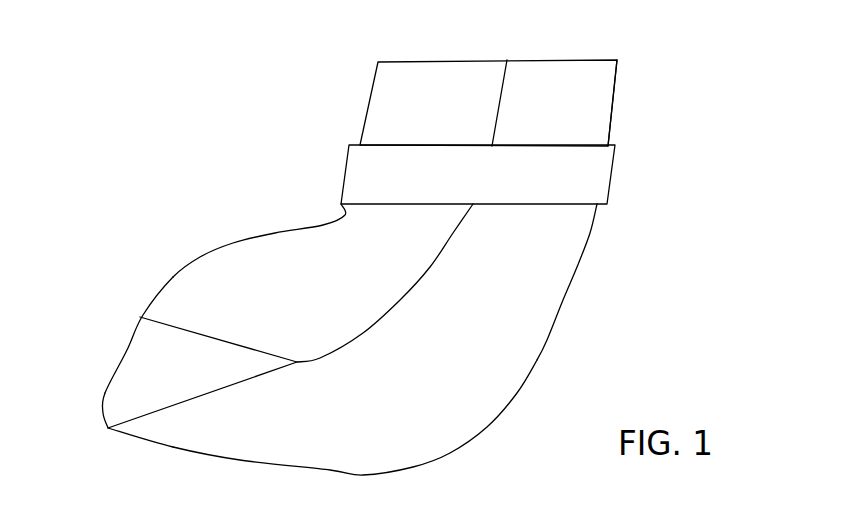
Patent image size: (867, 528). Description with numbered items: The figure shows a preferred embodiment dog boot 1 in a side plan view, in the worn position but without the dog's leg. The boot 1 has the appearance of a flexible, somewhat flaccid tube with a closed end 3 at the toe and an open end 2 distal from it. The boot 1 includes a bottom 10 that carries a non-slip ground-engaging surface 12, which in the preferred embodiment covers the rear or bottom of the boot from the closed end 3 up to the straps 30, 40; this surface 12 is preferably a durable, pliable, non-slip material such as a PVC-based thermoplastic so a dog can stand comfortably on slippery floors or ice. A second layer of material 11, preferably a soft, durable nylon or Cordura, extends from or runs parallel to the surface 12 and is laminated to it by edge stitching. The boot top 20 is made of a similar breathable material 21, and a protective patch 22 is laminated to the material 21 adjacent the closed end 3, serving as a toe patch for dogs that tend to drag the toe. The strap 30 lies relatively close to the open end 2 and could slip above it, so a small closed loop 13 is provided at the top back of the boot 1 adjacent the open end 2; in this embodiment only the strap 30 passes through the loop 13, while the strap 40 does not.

The boot 1 is at (180, 83).
The open end 2 is at (440, 60).
The closed end 3 is at (108, 428).
The bottom 10 is at (548, 345).
The second layer of material 11 is at (592, 68).
The non-slip ground-engaging surface 12 is at (442, 448).
The closed loop 13 is at (623, 112).
The boot top 20 is at (275, 233).
The material 21 is at (197, 270).
The protective patch 22 is at (130, 358).
The strap 30 is at (457, 103).
The strap 40 is at (362, 177).